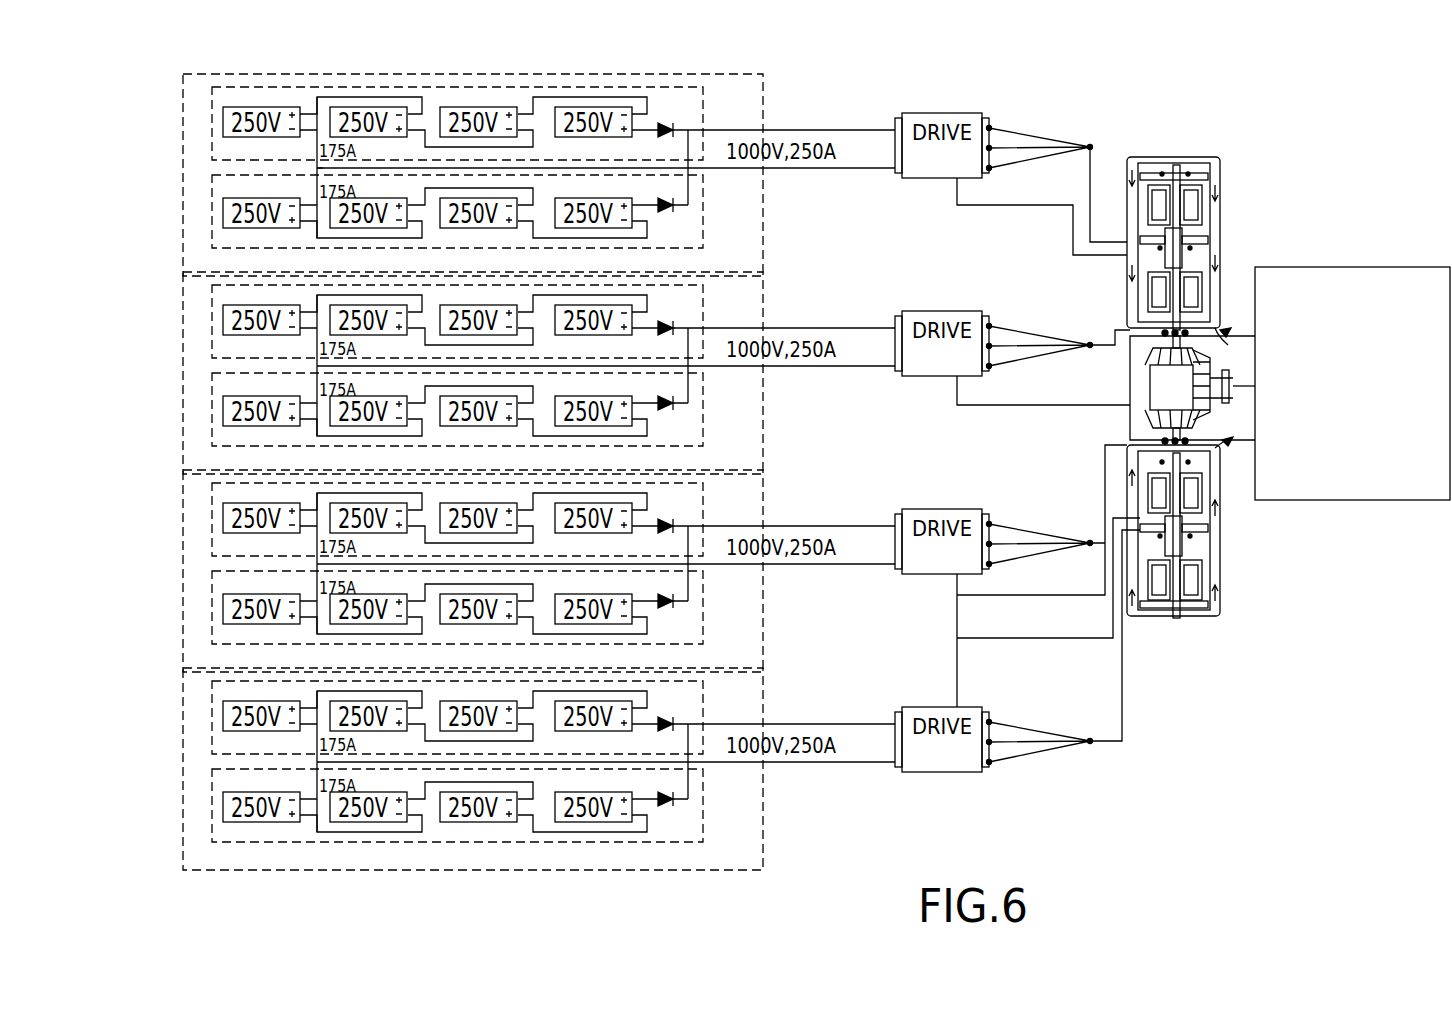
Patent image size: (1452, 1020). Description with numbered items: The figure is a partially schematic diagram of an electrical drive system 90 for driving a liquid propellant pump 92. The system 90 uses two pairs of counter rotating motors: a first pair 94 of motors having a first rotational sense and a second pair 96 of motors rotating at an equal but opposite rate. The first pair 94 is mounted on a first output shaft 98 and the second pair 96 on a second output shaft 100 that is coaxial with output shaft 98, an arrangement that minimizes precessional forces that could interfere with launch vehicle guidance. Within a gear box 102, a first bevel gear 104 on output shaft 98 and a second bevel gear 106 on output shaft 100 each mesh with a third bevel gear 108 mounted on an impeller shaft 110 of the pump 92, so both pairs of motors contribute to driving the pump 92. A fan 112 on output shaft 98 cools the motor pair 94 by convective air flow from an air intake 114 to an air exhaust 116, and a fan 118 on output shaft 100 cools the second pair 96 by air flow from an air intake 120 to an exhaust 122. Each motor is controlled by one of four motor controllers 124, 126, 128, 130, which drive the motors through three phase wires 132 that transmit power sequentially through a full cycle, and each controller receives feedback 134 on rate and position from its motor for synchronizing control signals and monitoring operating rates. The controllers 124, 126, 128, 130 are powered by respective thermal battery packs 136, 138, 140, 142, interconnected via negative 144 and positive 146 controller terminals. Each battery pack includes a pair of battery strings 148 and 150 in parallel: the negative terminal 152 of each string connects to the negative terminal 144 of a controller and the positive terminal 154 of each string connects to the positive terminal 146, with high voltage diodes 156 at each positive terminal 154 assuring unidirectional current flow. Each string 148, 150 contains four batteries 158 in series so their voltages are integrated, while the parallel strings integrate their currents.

The electrical drive system 90 is at (1240, 390).
The liquid propellant pump 92 is at (1338, 192).
The first pair of motors 94 is at (1190, 287).
The second pair of motors 96 is at (1190, 565).
The first output shaft 98 is at (1175, 162).
The second output shaft 100 is at (1175, 590).
The gear box 102 is at (1135, 405).
The first bevel gear 104 is at (1222, 345).
The second bevel gear 106 is at (1235, 414).
The third bevel gear 108 is at (1225, 385).
The impeller shaft 110 is at (1232, 377).
The fan 112 is at (1160, 160).
The air intake 114 is at (1212, 158).
The air exhaust 116 is at (1222, 325).
The fan 118 is at (1145, 610).
The air intake 120 is at (1133, 620).
The air exhaust 122 is at (1222, 440).
The motor controller 124 is at (958, 113).
The motor controller 126 is at (958, 311).
The motor controller 128 is at (958, 509).
The motor controller 130 is at (958, 707).
The three phase wires 132 is at (1003, 163).
The feedback 134 is at (967, 205).
The thermal battery pack 136 is at (763, 248).
The thermal battery pack 138 is at (765, 420).
The thermal battery pack 140 is at (765, 595).
The thermal battery pack 142 is at (765, 822).
The negative controller terminal 144 is at (896, 168).
The positive controller terminal 146 is at (896, 126).
The battery string 148 is at (703, 192).
The battery string 150 is at (705, 107).
The negative terminal of string 152 is at (317, 168).
The positive terminal of string 154 is at (688, 118).
The high voltage diode 156 is at (673, 208).
The battery 158 is at (640, 806).